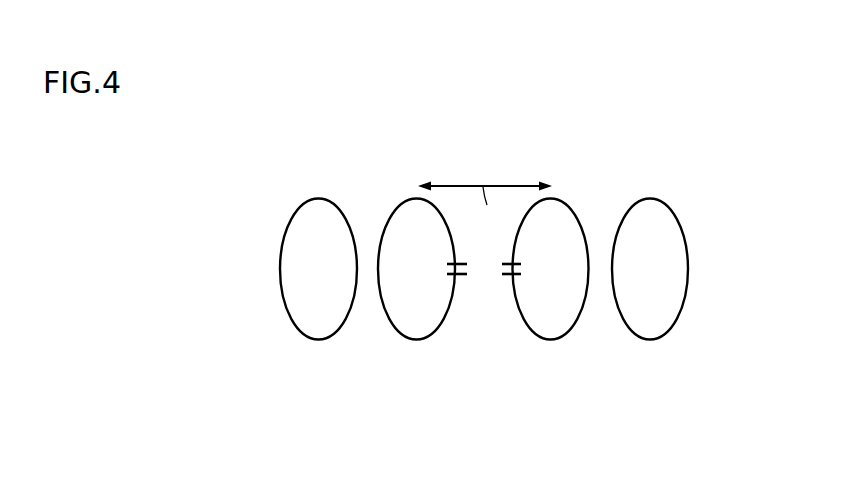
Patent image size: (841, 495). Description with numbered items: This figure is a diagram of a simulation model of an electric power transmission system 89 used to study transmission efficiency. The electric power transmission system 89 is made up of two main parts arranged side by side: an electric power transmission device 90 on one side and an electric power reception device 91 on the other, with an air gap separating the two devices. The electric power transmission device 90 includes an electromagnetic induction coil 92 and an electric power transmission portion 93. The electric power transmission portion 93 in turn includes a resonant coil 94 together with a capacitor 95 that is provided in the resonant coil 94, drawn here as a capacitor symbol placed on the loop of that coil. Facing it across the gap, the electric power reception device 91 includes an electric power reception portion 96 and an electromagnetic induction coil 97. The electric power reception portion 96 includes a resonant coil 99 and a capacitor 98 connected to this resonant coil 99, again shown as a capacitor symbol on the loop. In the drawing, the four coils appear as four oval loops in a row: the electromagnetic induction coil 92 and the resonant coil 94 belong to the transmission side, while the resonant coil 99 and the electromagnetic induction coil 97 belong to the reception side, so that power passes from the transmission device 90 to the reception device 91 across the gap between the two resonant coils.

The electric power transmission system 89 is at (690, 172).
The electric power transmission device 90 is at (298, 412).
The electric power reception device 91 is at (670, 412).
The electromagnetic induction coil 92 is at (318, 340).
The electric power transmission portion 93 is at (398, 383).
The resonant coil 94 is at (416, 340).
The capacitor 95 is at (457, 275).
The electric power reception portion 96 is at (570, 383).
The electromagnetic induction coil 97 is at (650, 340).
The capacitor 98 is at (511, 275).
The resonant coil 99 is at (551, 340).